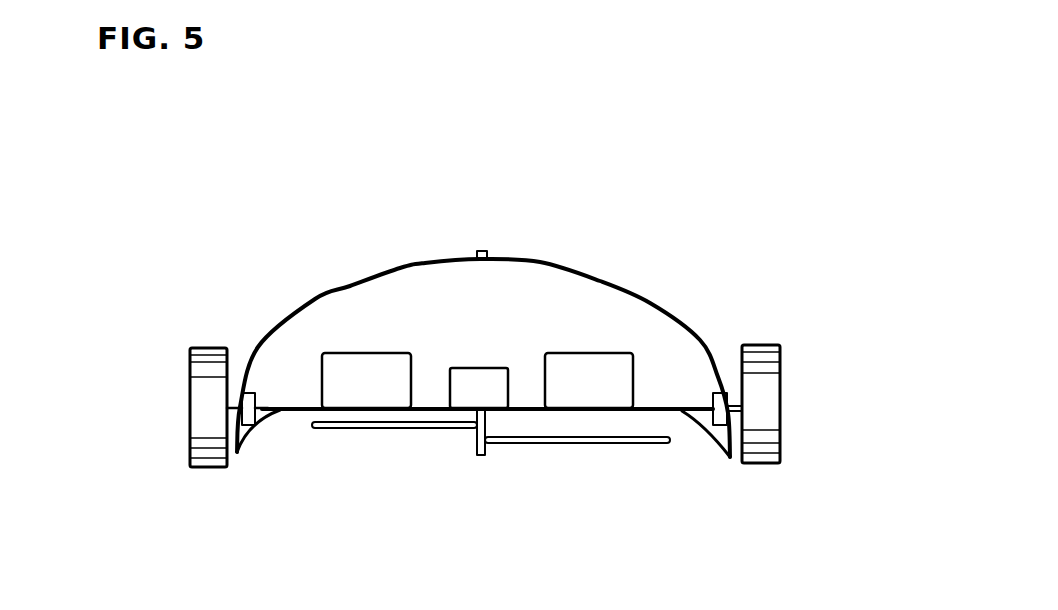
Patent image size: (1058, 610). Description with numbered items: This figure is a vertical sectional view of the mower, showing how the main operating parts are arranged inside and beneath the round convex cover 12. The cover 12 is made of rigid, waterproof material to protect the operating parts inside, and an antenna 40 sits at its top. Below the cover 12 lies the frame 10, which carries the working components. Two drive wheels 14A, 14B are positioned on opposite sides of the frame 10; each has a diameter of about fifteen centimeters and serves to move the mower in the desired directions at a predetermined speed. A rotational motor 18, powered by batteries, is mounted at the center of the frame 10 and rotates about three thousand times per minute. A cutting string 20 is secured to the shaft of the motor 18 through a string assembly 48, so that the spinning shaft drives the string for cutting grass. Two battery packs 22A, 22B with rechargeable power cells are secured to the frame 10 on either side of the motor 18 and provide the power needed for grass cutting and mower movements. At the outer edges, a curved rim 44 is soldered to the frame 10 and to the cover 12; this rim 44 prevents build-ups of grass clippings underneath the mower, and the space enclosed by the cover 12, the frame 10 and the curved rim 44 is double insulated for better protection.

The frame 10 is at (270, 407).
The round convex cover 12 is at (540, 262).
The drive wheel 14A is at (188, 385).
The drive wheel 14B is at (782, 370).
The rotational motor 18 is at (463, 367).
The cutting string 20 is at (348, 430).
The battery pack 22A is at (328, 350).
The battery pack 22B is at (628, 350).
The antenna 40 is at (480, 251).
The curved rim 44 is at (702, 423).
The string assembly 48 is at (477, 440).